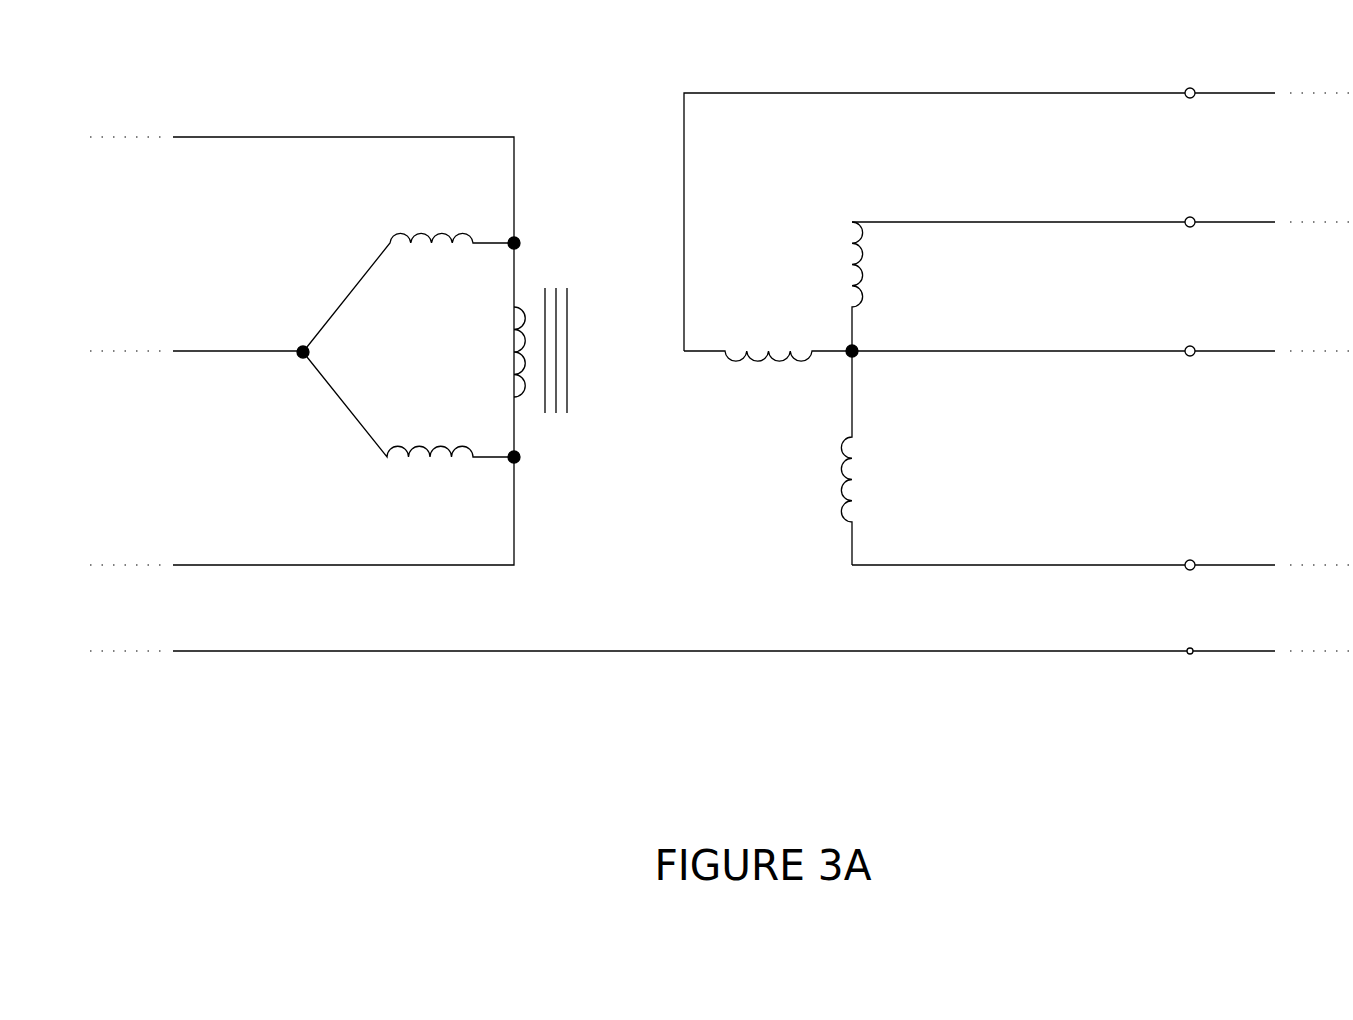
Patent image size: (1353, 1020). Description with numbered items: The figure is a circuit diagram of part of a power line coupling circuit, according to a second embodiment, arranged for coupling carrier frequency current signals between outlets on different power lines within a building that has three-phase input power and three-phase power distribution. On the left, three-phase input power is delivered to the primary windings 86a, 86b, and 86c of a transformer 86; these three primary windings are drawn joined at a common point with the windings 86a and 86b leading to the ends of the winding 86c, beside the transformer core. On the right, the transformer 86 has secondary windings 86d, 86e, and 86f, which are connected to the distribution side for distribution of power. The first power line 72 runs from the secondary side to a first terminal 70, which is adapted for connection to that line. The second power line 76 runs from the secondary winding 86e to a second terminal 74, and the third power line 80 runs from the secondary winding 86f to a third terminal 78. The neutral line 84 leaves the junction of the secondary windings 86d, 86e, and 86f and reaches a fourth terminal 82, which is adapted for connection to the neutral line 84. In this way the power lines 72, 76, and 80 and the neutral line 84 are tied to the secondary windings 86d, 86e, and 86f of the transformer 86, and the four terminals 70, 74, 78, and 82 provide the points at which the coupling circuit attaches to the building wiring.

The first terminal 70 is at (1183, 82).
The first power line 72 is at (858, 82).
The second terminal 74 is at (1197, 232).
The second power line 76 is at (1061, 232).
The third terminal 78 is at (1193, 552).
The third power line 80 is at (977, 552).
The fourth terminal 82 is at (1197, 370).
The neutral line 84 is at (1008, 375).
The transformer 86 is at (558, 115).
The primary winding 86a is at (399, 222).
The primary winding 86b is at (432, 477).
The primary winding 86c is at (493, 352).
The secondary winding 86d is at (767, 329).
The secondary winding 86e is at (862, 297).
The secondary winding 86f is at (832, 458).